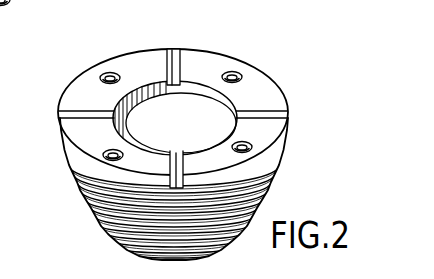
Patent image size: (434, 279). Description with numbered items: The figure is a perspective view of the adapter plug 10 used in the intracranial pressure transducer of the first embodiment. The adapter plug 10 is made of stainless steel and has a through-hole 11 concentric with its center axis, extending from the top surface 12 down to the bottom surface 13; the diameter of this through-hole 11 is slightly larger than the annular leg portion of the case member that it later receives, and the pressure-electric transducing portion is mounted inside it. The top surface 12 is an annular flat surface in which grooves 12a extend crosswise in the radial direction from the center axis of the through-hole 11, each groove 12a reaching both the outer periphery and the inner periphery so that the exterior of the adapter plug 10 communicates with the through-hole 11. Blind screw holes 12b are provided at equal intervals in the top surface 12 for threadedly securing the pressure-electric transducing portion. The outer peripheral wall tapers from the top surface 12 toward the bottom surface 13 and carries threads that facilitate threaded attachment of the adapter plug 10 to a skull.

The adapter plug 10 is at (281, 88).
The through-hole 11 is at (188, 126).
The top surface 12 is at (218, 53).
The grooves 12a is at (175, 48).
The blind screw holes 12b is at (104, 72).
The bottom surface 13 is at (110, 237).